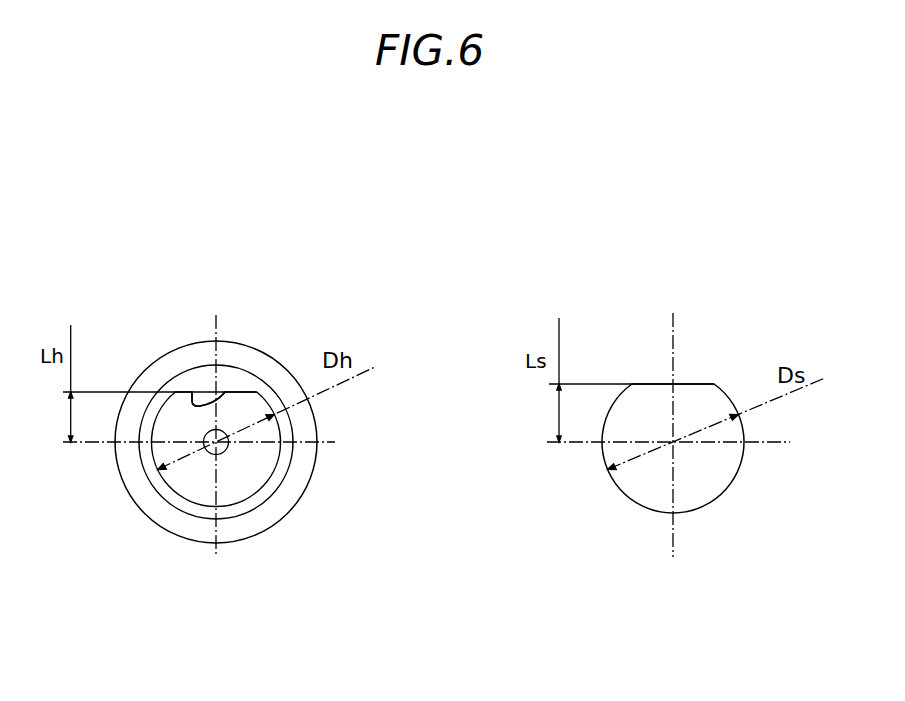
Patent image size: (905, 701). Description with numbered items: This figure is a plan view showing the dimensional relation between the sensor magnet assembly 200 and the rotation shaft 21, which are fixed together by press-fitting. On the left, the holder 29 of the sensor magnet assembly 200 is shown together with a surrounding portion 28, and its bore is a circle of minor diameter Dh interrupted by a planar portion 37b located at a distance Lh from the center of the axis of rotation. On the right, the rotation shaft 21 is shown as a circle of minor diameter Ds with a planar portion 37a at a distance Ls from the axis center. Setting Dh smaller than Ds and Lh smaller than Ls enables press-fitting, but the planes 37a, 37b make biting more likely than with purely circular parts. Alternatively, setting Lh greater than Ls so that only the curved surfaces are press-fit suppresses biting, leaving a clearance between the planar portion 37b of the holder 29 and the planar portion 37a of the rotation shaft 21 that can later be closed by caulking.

The rotation shaft 21 is at (690, 473).
The housing 28 is at (300, 475).
The holder 29 is at (182, 502).
The planar portion of the rotation shaft 37a is at (653, 384).
The planar portion of the holder 37b is at (192, 392).
The sensor magnet assembly 200 is at (219, 665).